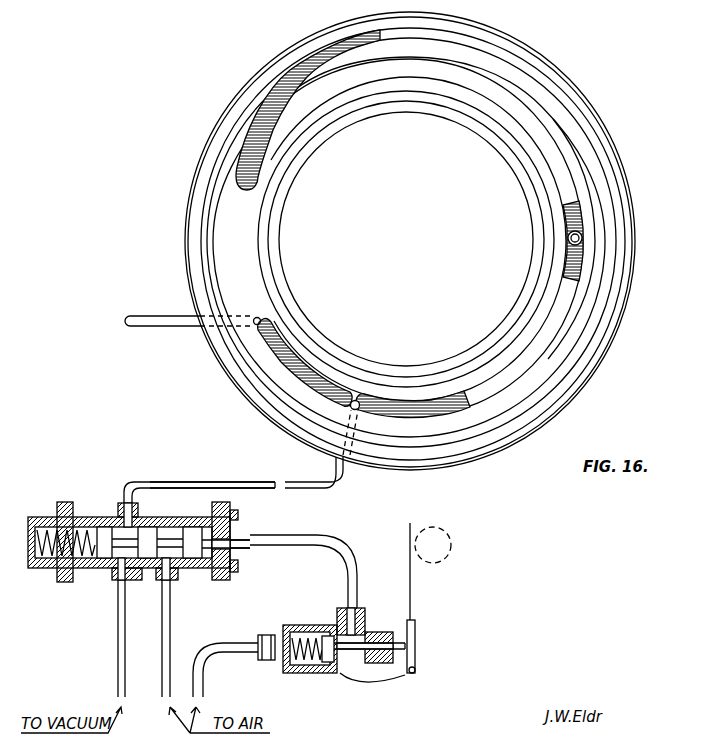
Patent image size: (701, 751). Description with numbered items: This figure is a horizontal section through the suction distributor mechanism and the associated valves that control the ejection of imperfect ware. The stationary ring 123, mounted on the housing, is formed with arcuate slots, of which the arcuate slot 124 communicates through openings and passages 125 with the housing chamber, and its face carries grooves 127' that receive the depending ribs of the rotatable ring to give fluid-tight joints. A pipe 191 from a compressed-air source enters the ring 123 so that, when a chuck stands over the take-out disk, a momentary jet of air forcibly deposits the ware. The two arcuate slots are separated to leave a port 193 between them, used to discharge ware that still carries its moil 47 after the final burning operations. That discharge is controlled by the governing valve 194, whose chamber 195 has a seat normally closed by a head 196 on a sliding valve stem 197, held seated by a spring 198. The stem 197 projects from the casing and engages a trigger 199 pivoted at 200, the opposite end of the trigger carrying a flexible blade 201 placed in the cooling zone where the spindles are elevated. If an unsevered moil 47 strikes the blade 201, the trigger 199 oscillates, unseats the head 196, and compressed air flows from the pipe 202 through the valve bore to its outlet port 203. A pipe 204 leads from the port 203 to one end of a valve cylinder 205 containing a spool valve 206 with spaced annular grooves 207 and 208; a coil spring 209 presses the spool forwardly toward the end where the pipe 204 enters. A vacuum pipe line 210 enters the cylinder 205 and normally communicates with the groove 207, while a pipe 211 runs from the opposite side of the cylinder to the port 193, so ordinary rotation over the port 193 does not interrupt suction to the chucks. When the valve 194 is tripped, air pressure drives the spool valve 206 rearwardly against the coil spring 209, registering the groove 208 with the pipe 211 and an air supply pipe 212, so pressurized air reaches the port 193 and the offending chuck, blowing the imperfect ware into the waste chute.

The stationary ring 123 is at (632, 243).
The arcuate slot 124 is at (560, 330).
The openings and passages 125 is at (580, 236).
The grooves 127' is at (400, 225).
The pipe 191 is at (166, 325).
The port 193 is at (360, 402).
The governing valve 194 is at (337, 675).
The chamber 195 is at (310, 668).
The head 196 is at (328, 638).
The sliding valve stem 197 is at (365, 655).
The spring 198 is at (270, 634).
The trigger 199 is at (416, 640).
The pivot 200 is at (417, 672).
The flexible blade 201 is at (413, 585).
The pipe 202 is at (222, 652).
The outlet port 203 is at (356, 625).
The pipe 204 is at (350, 578).
The valve cylinder 205 is at (110, 580).
The spool valve 206 is at (242, 543).
The groove 207 is at (112, 520).
The groove 208 is at (180, 517).
The coil spring 209 is at (66, 512).
The vacuum pipe line 210 is at (118, 652).
The pipe 211 is at (226, 480).
The air supply pipe 212 is at (170, 624).
The moil 47 is at (455, 552).